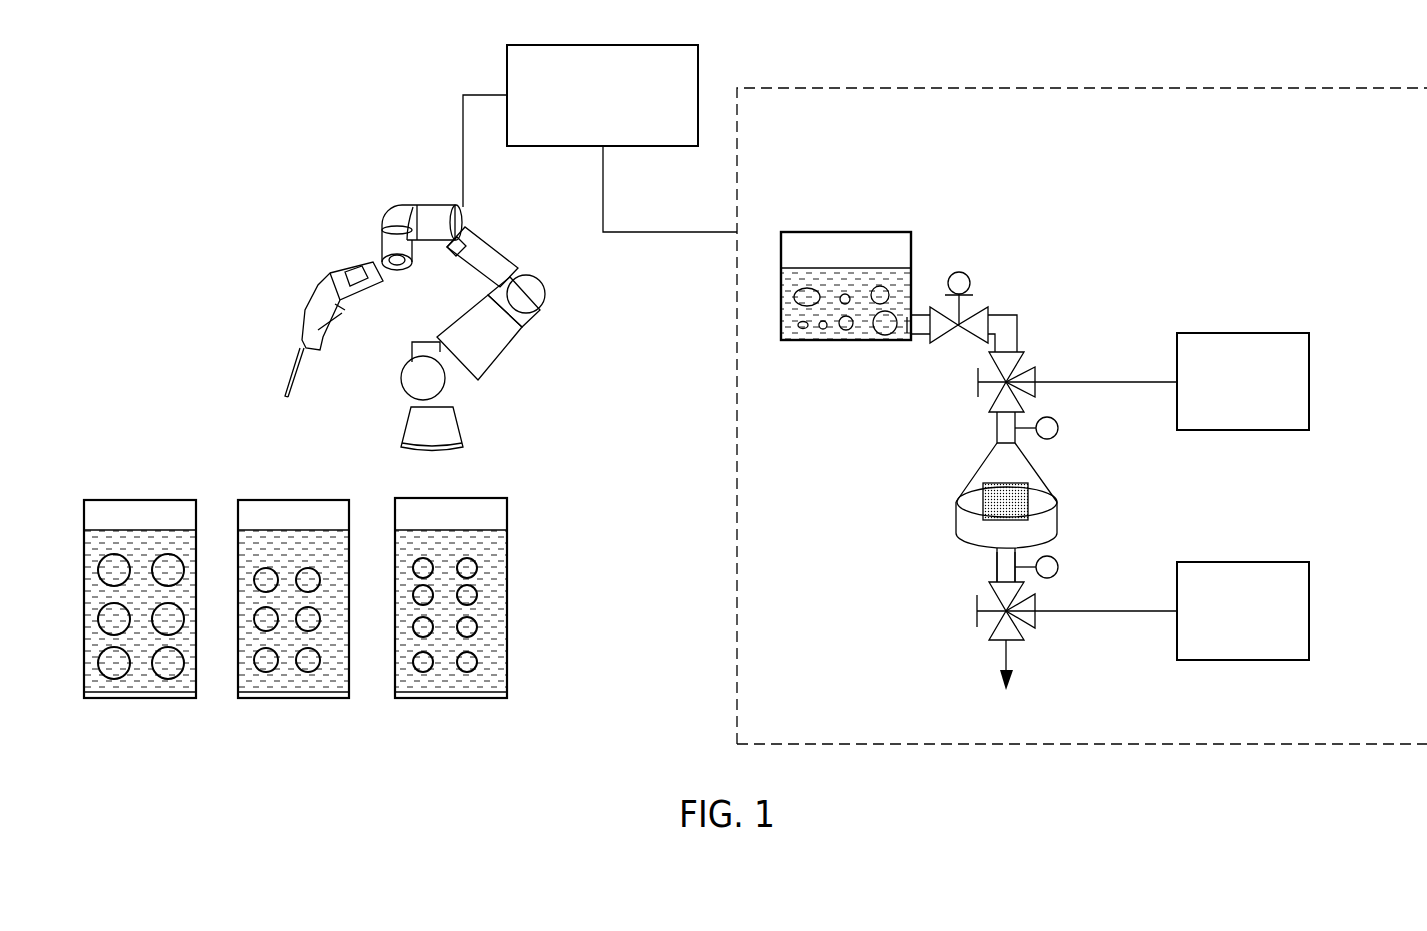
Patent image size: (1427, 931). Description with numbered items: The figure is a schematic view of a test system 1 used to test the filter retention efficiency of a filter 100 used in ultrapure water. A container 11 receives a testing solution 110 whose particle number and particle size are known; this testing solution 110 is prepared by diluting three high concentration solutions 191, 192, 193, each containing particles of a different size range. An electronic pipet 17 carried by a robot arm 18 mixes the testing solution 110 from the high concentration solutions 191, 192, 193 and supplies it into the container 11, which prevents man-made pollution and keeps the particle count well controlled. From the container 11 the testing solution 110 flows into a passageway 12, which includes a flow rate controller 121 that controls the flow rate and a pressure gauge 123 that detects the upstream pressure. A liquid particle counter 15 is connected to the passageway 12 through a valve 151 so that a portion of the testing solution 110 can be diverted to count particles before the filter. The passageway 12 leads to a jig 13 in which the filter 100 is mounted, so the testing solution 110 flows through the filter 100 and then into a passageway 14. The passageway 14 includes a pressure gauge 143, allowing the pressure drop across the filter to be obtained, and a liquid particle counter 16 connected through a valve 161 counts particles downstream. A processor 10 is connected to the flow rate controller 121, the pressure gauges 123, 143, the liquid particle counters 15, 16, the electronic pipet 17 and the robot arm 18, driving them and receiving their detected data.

The test system 1 is at (243, 165).
The processor 10 is at (580, 96).
The container 11 is at (848, 232).
The testing solution 110 is at (798, 332).
The passageway 12 is at (1017, 325).
The flow rate controller 121 is at (958, 273).
The valve 151 is at (1035, 375).
The liquid particle counter 15 is at (1225, 396).
The jig 13 is at (968, 523).
The filter 100 is at (1012, 505).
The pressure gauge 123 is at (1057, 430).
The pressure gauge 143 is at (1038, 558).
The passageway 14 is at (993, 567).
The valve 161 is at (1032, 617).
The liquid particle counter 16 is at (1225, 624).
The electronic pipet 17 is at (312, 325).
The robot arm 18 is at (533, 302).
The high concentration solution 191 is at (155, 540).
The high concentration solution 192 is at (313, 547).
The high concentration solution 193 is at (483, 550).